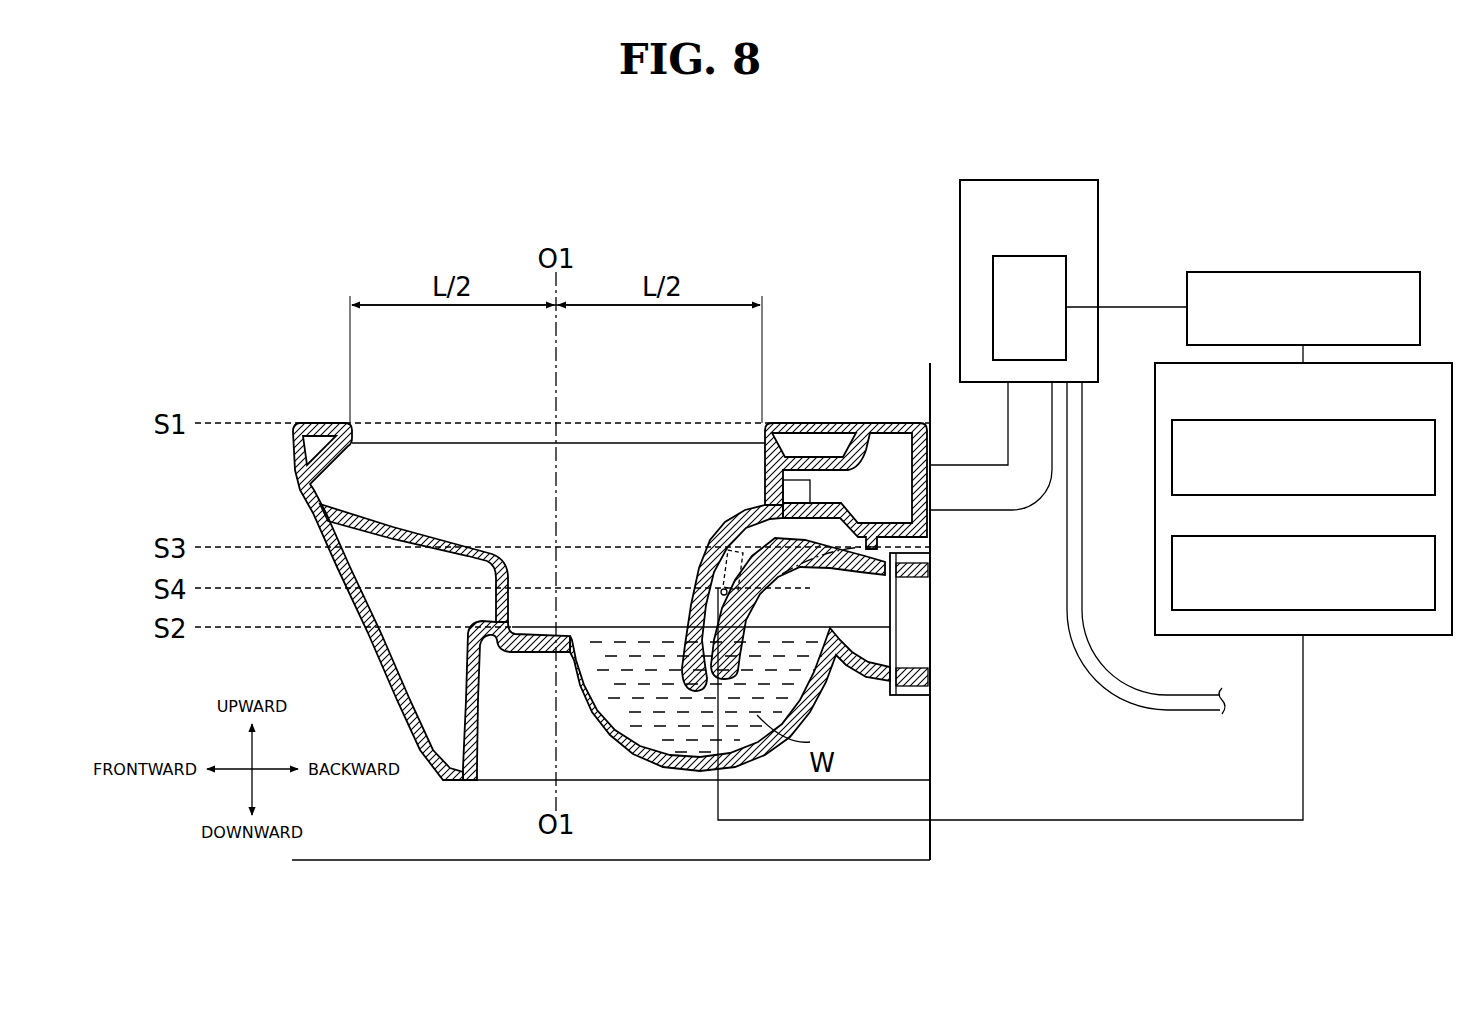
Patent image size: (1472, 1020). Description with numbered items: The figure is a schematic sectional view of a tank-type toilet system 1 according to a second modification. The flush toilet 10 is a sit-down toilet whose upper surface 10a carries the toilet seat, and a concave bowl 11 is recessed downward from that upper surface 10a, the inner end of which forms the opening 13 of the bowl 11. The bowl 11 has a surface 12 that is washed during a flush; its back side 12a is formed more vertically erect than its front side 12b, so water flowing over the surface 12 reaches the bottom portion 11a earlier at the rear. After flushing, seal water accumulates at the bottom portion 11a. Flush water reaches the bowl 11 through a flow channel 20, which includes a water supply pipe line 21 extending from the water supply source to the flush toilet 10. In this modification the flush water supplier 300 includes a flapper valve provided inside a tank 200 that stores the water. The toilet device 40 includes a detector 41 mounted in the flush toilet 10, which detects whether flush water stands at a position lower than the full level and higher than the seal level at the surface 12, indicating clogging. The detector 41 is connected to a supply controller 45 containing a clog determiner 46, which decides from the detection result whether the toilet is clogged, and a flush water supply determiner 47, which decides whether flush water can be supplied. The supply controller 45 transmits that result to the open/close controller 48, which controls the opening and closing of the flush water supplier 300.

The toilet system 1 is at (906, 134).
The flush toilet 10 is at (829, 418).
The upper surface 10a is at (325, 423).
The bowl 11 is at (413, 533).
The bottom portion 11a is at (662, 757).
The surface 12 is at (437, 548).
The back side 12a is at (727, 525).
The front side 12b is at (393, 525).
The opening 13 is at (760, 430).
The flow channel 20 is at (1099, 678).
The water supply pipe line 21 is at (952, 465).
The toilet device 40 is at (965, 578).
The detector 41 is at (930, 548).
The supply controller 45 is at (1155, 393).
The clog determiner 46 is at (1383, 536).
The flush water supply determiner 47 is at (1383, 420).
The open/close controller 48 is at (1383, 272).
The tank 200 is at (960, 222).
The flush water supplier 300 is at (993, 290).